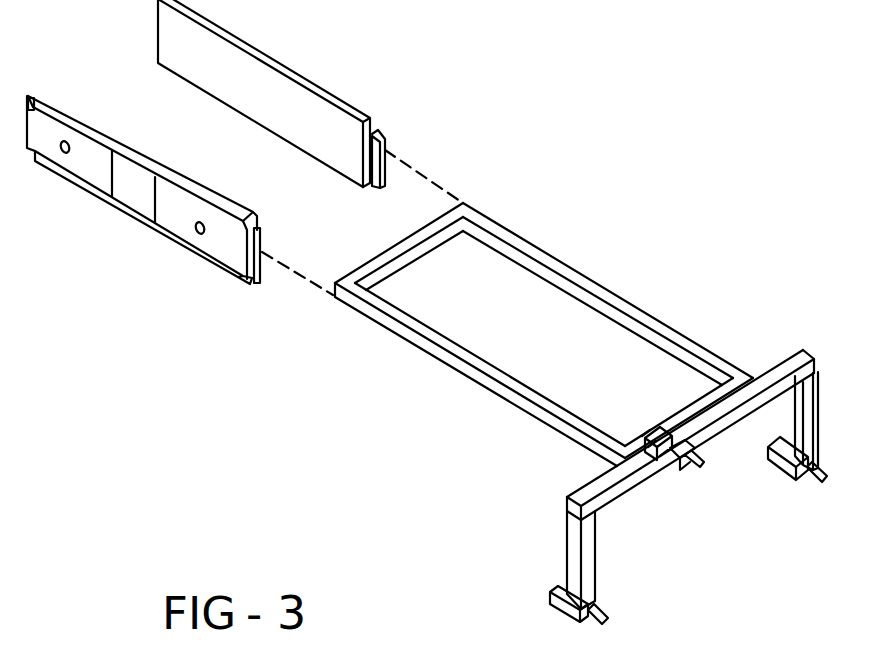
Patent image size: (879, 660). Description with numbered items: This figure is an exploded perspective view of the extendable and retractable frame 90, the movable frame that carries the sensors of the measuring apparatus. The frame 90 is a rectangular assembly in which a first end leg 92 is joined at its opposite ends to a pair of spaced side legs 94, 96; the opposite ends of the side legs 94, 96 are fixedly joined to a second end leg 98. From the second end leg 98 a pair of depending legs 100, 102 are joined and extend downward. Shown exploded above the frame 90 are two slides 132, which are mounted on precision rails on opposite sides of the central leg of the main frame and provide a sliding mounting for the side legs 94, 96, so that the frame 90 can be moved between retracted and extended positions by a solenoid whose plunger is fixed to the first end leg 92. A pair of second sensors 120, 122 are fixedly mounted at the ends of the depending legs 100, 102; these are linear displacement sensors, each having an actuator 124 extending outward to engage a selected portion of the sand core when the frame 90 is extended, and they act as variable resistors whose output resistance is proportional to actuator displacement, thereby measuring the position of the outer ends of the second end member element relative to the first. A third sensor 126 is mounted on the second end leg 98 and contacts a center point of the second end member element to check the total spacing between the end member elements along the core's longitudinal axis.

The extendable and retractable frame 90 is at (608, 122).
The first end leg 92 is at (544, 274).
The side leg 94 is at (590, 280).
The side leg 96 is at (432, 342).
The second end leg 98 is at (613, 496).
The depending leg 100 is at (593, 577).
The depending leg 102 is at (817, 370).
The second sensor 120 is at (549, 591).
The second sensor 122 is at (777, 468).
The actuator 124 is at (602, 620).
The third sensor 126 is at (650, 428).
The slide 132 is at (46, 96).